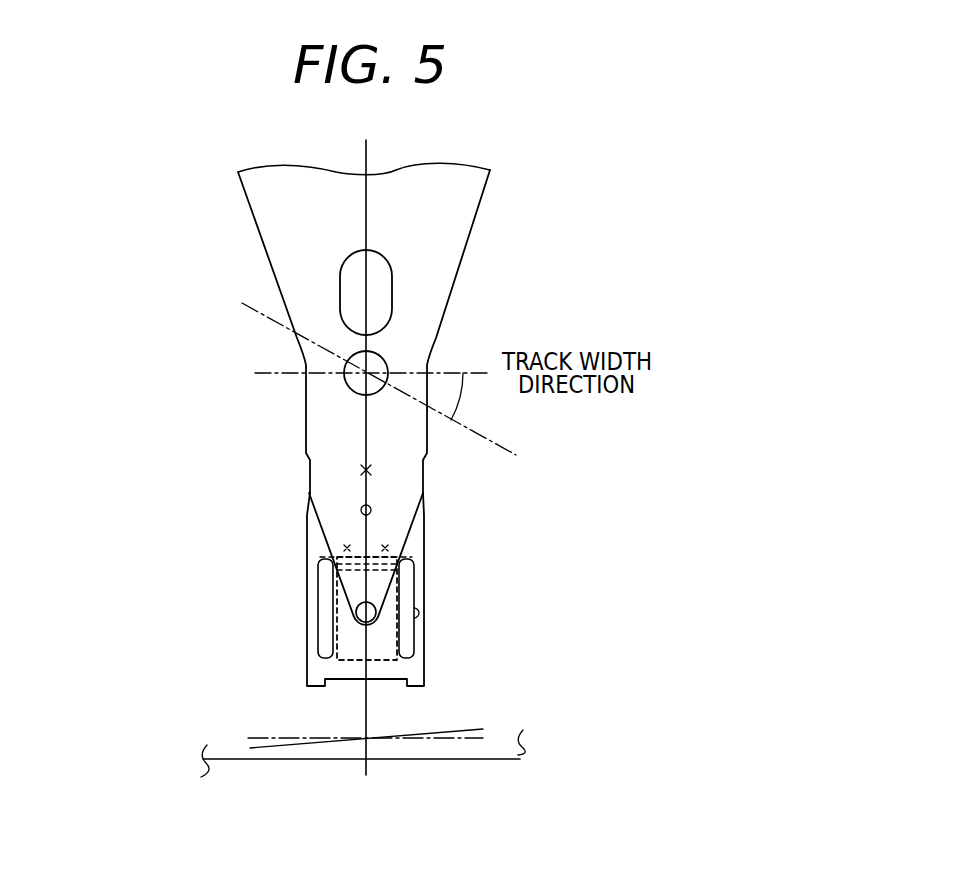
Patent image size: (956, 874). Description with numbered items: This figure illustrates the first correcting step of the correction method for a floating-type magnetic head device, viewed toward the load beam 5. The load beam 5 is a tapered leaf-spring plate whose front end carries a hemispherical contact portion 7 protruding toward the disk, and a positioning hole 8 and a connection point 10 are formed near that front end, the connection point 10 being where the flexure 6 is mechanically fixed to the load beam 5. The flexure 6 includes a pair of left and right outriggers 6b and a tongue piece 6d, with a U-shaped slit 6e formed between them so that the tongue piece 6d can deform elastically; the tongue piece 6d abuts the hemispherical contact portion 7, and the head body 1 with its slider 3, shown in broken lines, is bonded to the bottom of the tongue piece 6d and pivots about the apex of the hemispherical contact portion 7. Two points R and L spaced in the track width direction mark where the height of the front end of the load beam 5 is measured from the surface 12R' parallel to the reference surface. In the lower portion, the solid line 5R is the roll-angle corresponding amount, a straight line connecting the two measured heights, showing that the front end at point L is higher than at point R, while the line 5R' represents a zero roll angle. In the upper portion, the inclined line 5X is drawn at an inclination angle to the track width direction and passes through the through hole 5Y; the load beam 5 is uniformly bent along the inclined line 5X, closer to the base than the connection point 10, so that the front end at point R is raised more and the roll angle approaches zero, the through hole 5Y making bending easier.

The load beam 5 is at (437, 243).
The through hole 5Y is at (352, 389).
The inclined line 5X is at (468, 425).
The connection point 10 is at (372, 470).
The positioning hole 8 is at (372, 510).
The flexure 6 is at (291, 651).
The hemispherical contact portion 7 is at (377, 611).
The outriggers 6b is at (307, 602).
The U-shaped slit 6e is at (418, 616).
The tongue piece 6d is at (393, 620).
The head body 1 is at (337, 630).
The slider 3 is at (337, 630).
The point R is at (347, 548).
The point L is at (385, 548).
The surface parallel to the reference surface 12R' is at (354, 726).
The zero roll-angle line 5R' is at (361, 706).
The roll-angle corresponding amount 5R is at (386, 711).